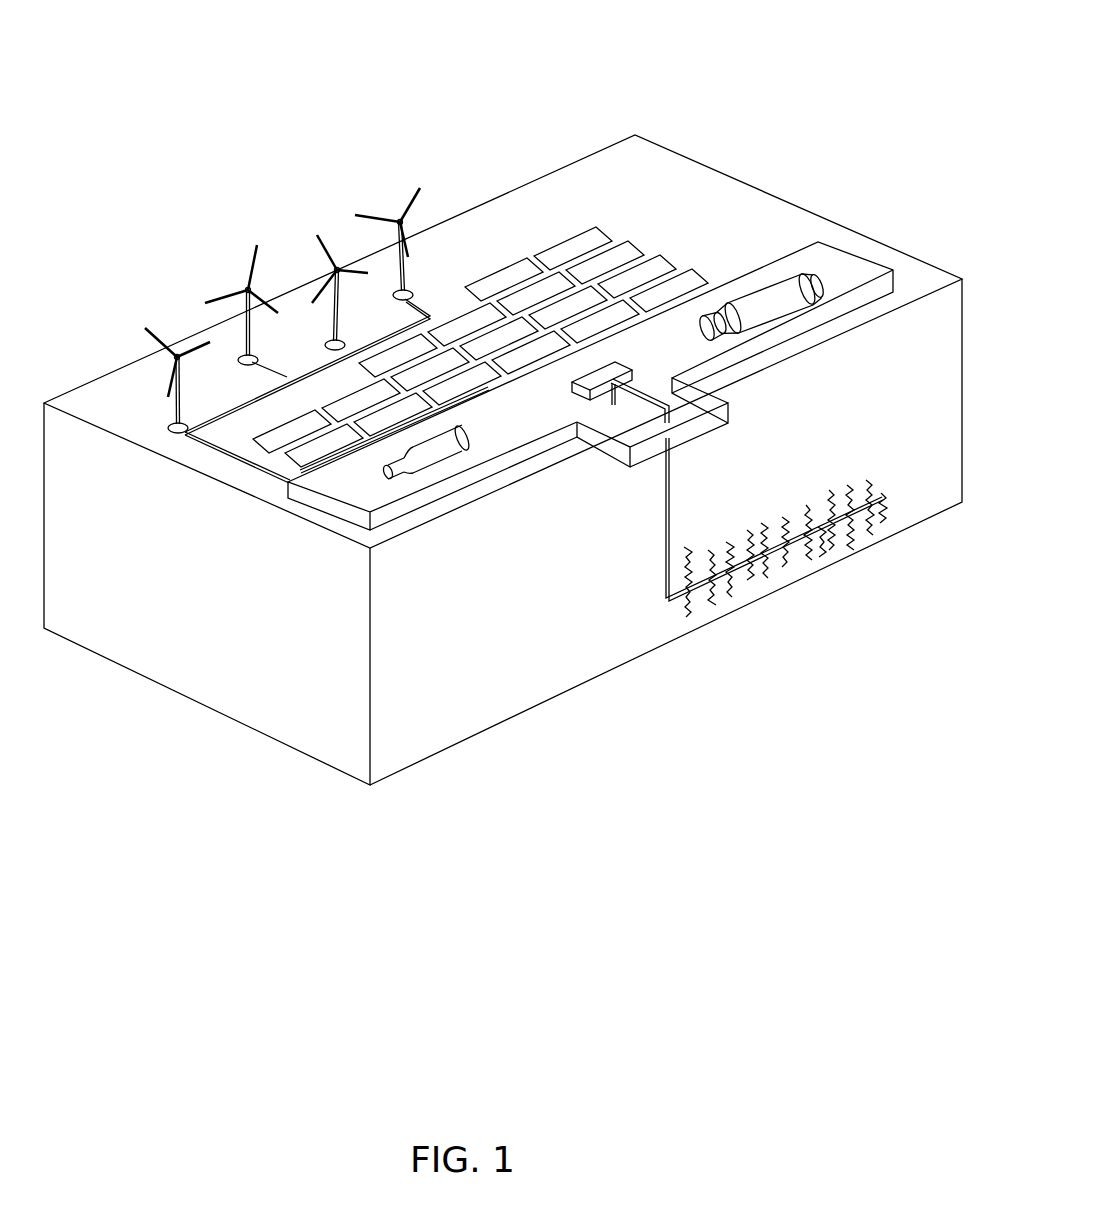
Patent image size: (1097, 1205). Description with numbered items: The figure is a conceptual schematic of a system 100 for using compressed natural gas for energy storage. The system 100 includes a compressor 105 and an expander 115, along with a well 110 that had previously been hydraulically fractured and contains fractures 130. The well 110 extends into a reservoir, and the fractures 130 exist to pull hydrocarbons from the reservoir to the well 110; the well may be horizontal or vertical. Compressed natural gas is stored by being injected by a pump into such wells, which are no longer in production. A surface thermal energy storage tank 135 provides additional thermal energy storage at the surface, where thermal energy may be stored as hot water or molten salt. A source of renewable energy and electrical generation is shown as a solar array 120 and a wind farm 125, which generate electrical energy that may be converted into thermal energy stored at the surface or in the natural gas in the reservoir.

The system 100 is at (847, 49).
The compressor 105 is at (361, 490).
The well 110 is at (652, 440).
The expander 115 is at (826, 249).
The solar array 120 is at (480, 328).
The wind farm 125 is at (287, 335).
The fractures 130 is at (776, 527).
The surface thermal energy storage tank 135 is at (599, 392).